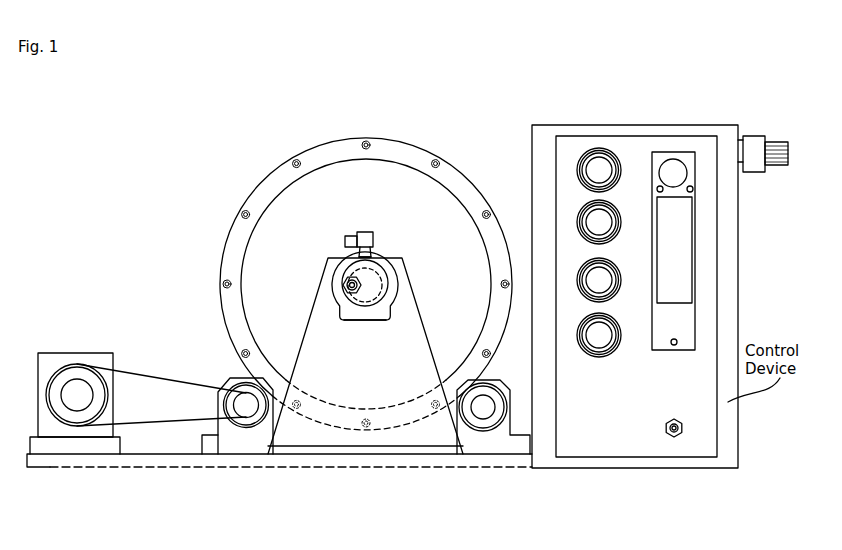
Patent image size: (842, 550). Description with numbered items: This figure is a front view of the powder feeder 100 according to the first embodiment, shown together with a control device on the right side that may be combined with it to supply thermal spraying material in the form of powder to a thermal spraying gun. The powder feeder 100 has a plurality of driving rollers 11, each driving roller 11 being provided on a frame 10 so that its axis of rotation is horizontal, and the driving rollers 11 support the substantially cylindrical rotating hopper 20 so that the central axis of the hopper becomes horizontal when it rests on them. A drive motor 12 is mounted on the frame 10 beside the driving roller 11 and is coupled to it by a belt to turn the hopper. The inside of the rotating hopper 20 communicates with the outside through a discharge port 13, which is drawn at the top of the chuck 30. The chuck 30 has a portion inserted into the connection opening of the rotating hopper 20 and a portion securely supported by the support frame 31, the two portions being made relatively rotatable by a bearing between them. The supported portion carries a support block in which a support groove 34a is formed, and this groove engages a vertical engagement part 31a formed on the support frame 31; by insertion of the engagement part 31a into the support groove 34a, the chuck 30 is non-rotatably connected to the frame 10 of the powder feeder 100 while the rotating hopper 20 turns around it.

The powder feeder 100 is at (238, 173).
The rotating hopper 20 is at (447, 122).
The discharge port 13 is at (347, 236).
The chuck 30 is at (330, 286).
The support frame 31 is at (415, 437).
The engagement part 31a is at (347, 247).
The support groove 34a is at (347, 310).
The drive motor 12 is at (68, 418).
The driving roller 11 is at (247, 425).
The frame 10 is at (522, 463).